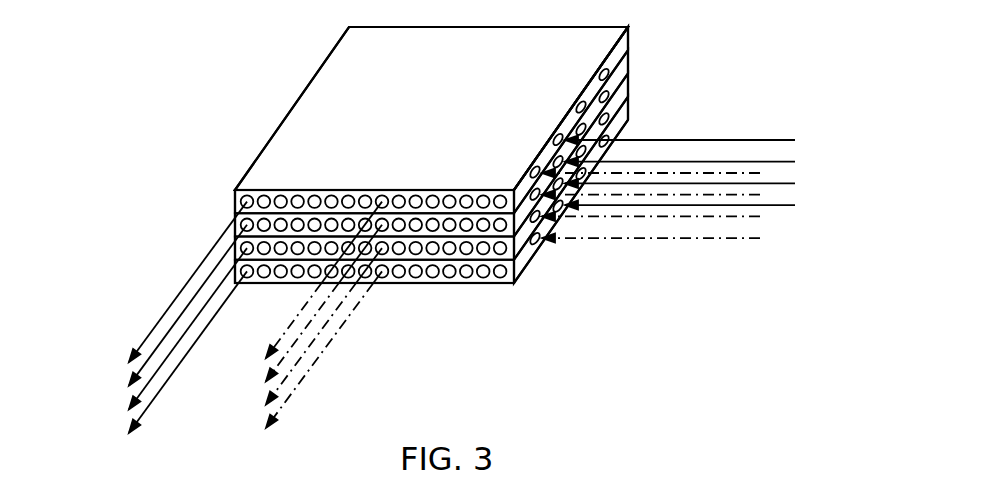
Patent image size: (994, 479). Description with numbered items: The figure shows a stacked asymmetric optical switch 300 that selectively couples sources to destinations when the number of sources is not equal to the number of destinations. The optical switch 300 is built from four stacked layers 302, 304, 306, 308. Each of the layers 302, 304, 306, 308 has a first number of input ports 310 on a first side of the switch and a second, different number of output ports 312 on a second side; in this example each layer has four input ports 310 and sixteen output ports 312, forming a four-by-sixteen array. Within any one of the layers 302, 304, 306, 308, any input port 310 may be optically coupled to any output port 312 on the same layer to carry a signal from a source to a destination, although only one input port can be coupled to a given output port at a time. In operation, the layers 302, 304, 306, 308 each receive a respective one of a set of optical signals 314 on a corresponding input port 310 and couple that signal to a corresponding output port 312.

The stacked asymmetric optical switch 300 is at (383, 145).
The first layer 302 is at (471, 114).
The second layer 304 is at (471, 138).
The third layer 306 is at (471, 161).
The fourth layer 308 is at (471, 184).
The input ports 310 is at (537, 167).
The output ports 312 is at (374, 237).
The optical signals 314 is at (121, 360).